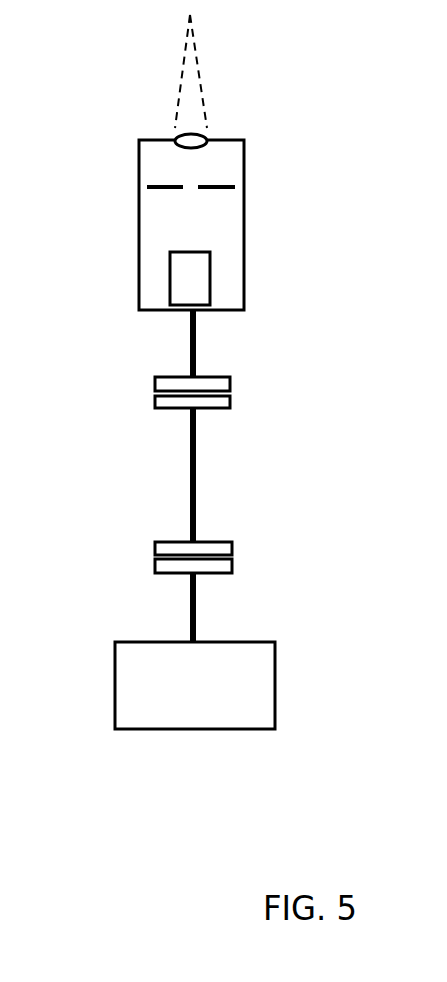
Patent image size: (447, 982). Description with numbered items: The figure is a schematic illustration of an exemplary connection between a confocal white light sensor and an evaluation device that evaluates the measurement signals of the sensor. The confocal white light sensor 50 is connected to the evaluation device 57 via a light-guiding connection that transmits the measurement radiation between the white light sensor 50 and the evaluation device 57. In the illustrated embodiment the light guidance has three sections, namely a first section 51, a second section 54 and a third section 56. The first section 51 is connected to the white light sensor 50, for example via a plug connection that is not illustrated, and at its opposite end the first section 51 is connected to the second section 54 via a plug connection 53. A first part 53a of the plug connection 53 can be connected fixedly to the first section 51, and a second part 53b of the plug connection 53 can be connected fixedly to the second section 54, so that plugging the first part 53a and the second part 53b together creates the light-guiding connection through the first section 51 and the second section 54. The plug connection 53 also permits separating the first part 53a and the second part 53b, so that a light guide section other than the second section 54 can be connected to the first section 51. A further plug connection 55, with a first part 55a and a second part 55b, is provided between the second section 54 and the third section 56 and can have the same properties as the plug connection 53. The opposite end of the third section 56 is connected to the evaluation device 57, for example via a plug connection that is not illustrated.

The confocal white light sensor 50 is at (244, 245).
The first section 51 is at (197, 336).
The plug connection 53 is at (206, 397).
The first part 53a is at (155, 381).
The second part 53b is at (155, 406).
The second section 54 is at (197, 470).
The further plug connection 55 is at (207, 557).
The first part 55a is at (155, 546).
The second part 55b is at (155, 568).
The third section 56 is at (197, 612).
The evaluation device 57 is at (275, 683).